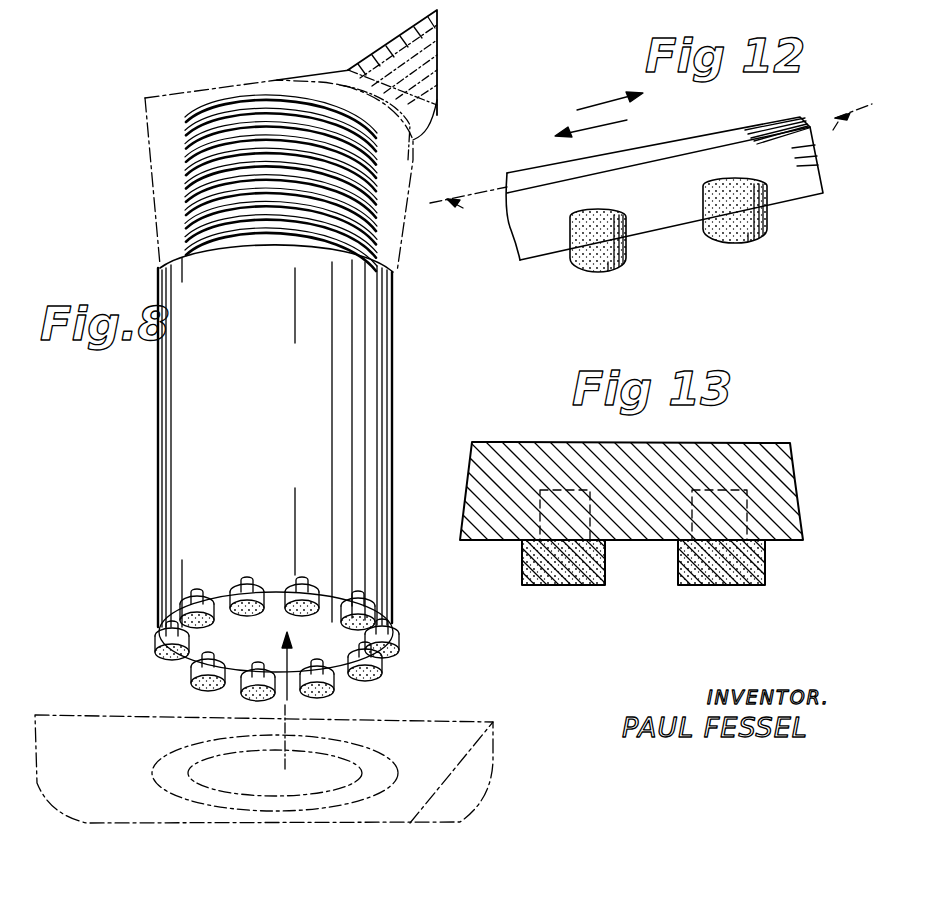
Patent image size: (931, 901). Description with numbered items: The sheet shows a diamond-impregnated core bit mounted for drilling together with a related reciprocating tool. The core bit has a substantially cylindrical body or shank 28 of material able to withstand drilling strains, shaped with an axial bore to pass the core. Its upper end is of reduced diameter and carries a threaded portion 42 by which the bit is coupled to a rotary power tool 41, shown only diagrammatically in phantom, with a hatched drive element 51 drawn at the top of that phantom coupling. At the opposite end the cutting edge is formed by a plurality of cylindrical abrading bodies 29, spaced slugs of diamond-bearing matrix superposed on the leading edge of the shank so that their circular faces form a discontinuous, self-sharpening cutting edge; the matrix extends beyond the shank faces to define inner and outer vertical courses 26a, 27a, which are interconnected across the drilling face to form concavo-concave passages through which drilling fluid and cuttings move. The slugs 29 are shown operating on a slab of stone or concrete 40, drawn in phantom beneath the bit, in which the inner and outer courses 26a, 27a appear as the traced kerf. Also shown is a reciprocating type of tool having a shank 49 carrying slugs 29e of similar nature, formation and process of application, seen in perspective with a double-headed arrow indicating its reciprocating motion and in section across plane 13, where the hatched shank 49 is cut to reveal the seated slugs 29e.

In FIG. 8, the conical cutting member 51 is at (363, 57).
In FIG. 8, the rotary power tool 41 is at (442, 90).
In FIG. 8, the threaded portion 42 is at (373, 170).
In FIG. 8, the shank 28 is at (156, 514).
In FIG. 8, the abrading bodies 29 is at (155, 650).
In FIG. 8, the slab of stone or concrete 40 is at (450, 730).
In FIG. 8, the outer vertical course 27a is at (358, 748).
In FIG. 8, the inner vertical course 26a is at (325, 758).
In FIG. 12, the shank 49 is at (682, 217).
In FIG. 13, the shank 49 is at (508, 447).
In FIG. 12, the slugs 29e is at (583, 270).
In FIG. 13, the slugs 29e is at (565, 577).
In FIG. 12, the section plane 13— 13 is at (651, 173).